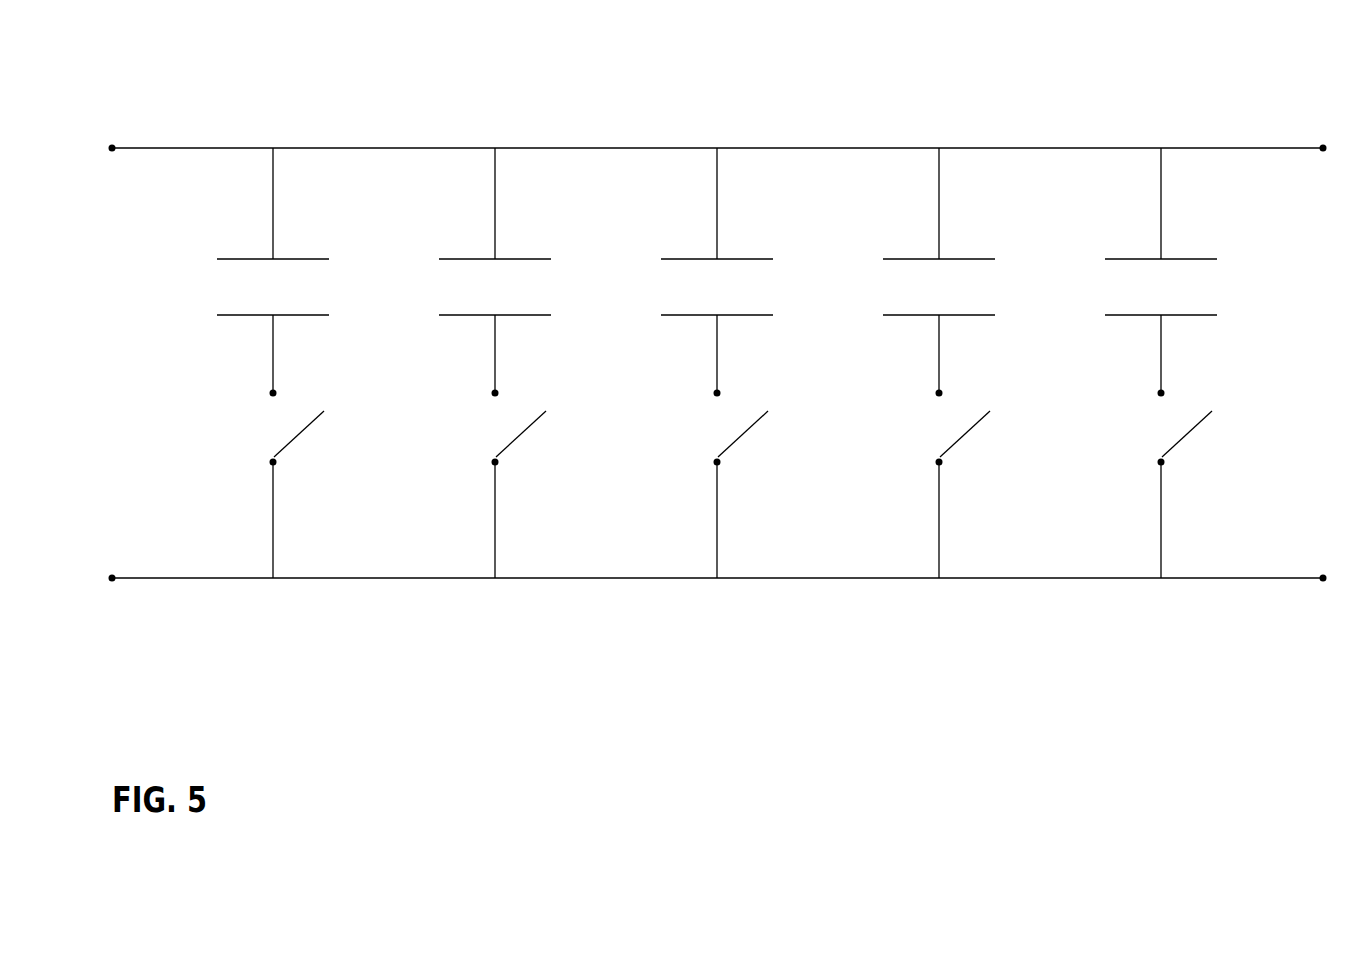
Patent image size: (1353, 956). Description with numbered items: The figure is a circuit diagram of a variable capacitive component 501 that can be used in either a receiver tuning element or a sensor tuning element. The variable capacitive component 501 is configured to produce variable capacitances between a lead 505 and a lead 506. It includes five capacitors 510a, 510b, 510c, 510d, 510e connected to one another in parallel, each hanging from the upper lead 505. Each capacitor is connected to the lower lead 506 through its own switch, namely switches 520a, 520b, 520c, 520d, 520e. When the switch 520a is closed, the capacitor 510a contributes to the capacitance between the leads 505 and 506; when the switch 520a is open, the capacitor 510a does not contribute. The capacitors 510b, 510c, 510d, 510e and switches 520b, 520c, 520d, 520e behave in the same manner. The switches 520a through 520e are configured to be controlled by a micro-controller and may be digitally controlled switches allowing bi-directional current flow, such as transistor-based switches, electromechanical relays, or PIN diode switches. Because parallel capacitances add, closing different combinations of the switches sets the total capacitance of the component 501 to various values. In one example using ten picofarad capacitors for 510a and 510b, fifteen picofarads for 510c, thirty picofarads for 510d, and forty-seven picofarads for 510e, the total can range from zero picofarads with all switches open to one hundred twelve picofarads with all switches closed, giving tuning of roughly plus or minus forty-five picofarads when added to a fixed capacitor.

The variable capacitive component 501 is at (271, 112).
The lead 505 is at (697, 149).
The lead 506 is at (697, 579).
The capacitor 510a is at (264, 270).
The capacitor 510b is at (475, 270).
The capacitor 510c is at (696, 270).
The capacitor 510d is at (922, 270).
The capacitor 510e is at (1137, 270).
The switch 520a is at (266, 484).
The switch 520b is at (488, 484).
The switch 520c is at (710, 484).
The switch 520d is at (937, 484).
The switch 520e is at (1160, 484).